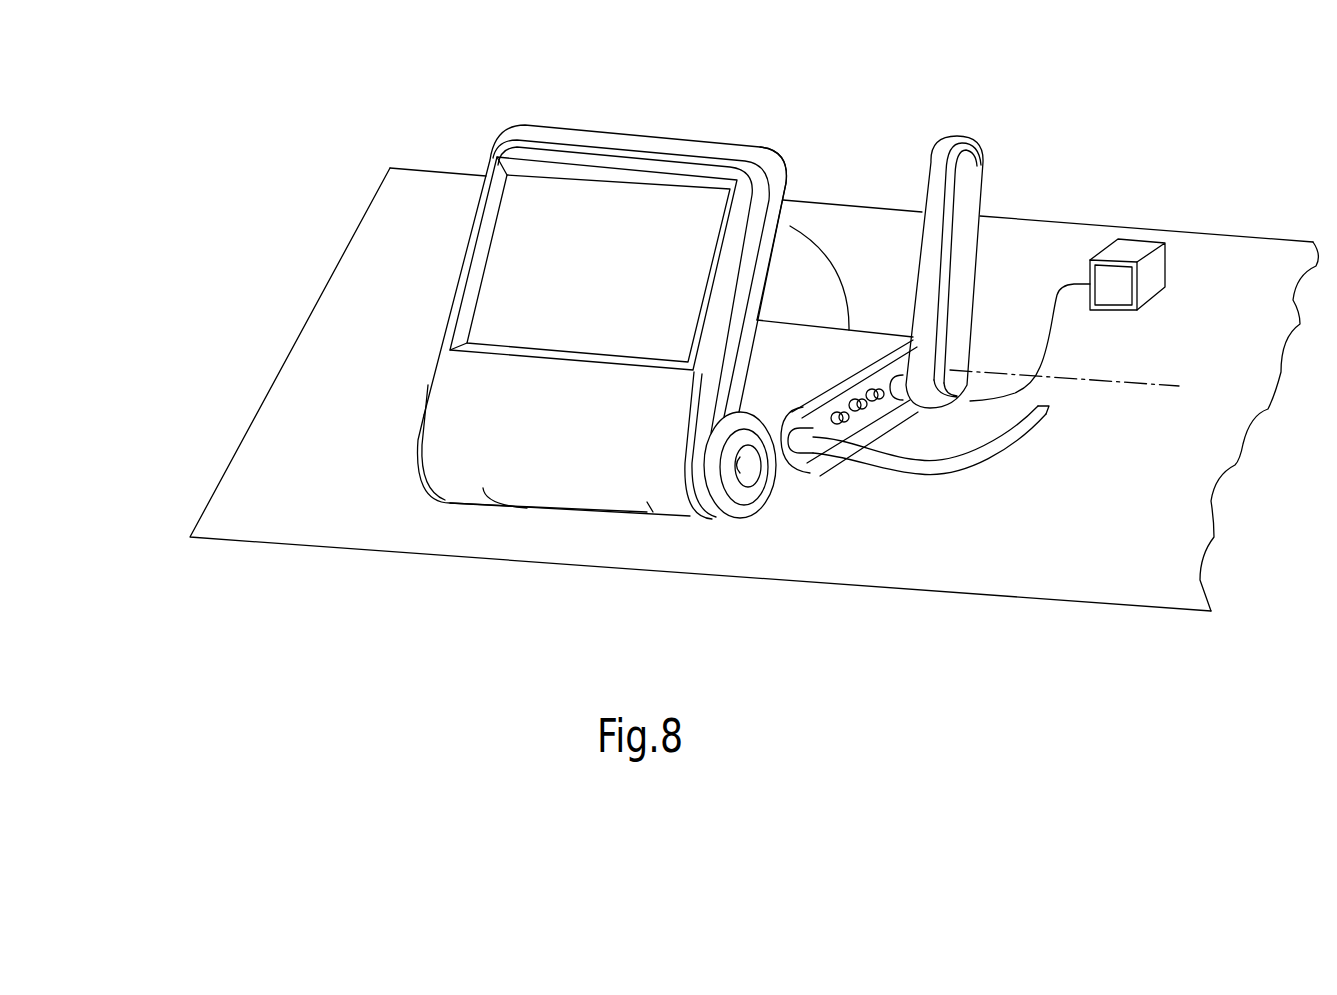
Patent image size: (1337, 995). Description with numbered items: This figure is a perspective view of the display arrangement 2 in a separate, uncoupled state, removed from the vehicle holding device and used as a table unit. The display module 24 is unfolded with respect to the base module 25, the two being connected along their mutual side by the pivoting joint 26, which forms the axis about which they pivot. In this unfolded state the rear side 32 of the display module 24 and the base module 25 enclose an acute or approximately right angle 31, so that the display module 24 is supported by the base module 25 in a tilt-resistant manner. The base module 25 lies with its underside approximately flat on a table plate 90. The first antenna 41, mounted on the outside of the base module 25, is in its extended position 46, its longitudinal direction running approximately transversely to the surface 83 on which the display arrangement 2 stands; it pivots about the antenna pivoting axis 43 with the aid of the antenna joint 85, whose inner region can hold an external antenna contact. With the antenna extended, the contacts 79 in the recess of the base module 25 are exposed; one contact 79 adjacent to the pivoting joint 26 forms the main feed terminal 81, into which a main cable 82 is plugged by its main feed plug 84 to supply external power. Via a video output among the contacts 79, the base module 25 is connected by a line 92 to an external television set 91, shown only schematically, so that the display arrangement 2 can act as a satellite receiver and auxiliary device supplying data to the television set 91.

The display arrangement 2 is at (377, 490).
The display module 24 is at (486, 124).
The base module 25 is at (887, 327).
The pivoting joint 26 is at (780, 524).
The angle 31 is at (825, 254).
The rear side of the display module 32 is at (804, 173).
The first antenna 41 is at (970, 190).
The antenna pivoting axis 43 is at (1125, 387).
The extended position 46 is at (982, 131).
The contacts 79 is at (892, 407).
The main feed terminal 81 is at (803, 467).
The main cable 82 is at (985, 461).
The surface 83 is at (1245, 353).
The main feed plug 84 is at (833, 473).
The antenna joint 85 is at (900, 427).
The table plate 90 is at (1160, 590).
The external television set 91 is at (1139, 247).
The line 92 is at (1043, 294).